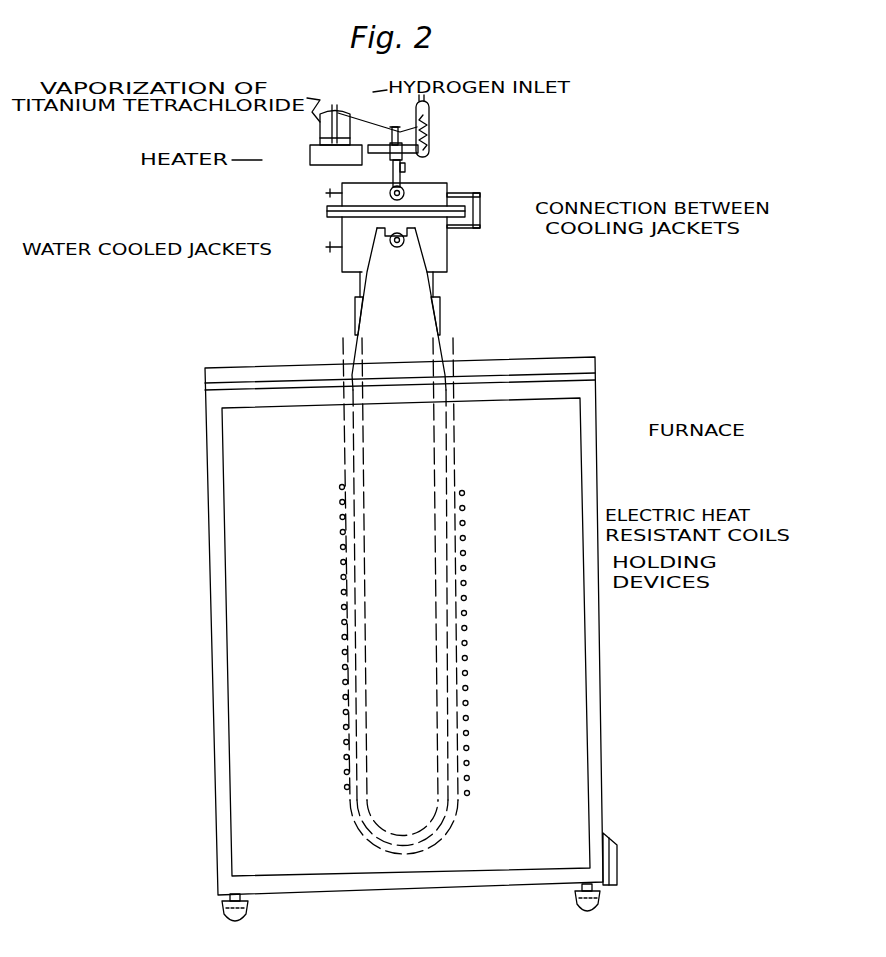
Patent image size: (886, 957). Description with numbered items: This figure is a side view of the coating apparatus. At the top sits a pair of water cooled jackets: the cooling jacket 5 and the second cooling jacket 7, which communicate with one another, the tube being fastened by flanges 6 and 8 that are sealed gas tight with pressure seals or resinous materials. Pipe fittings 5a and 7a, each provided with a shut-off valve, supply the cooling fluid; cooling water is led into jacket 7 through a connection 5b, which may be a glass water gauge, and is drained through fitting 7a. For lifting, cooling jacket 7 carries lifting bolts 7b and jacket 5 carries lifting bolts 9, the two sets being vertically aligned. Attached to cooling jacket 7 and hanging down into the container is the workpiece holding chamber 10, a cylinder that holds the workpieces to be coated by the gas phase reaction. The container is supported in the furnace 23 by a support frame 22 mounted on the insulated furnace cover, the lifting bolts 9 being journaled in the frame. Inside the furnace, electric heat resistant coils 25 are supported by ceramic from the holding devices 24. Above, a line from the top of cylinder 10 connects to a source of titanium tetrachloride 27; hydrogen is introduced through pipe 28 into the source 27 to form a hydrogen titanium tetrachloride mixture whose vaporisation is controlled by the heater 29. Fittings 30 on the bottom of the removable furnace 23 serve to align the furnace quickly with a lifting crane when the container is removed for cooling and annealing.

The cooling jacket 5 is at (283, 246).
The pipe fitting 5a is at (328, 249).
The connection 5b is at (480, 210).
The flange 6 is at (330, 219).
The second cooling jacket 7 is at (394, 195).
The pipe fitting 7a is at (326, 193).
The lifting bolts 7b is at (405, 194).
The flange 8 is at (470, 193).
The lifting bolts 9 is at (405, 241).
The workpiece holding chamber 10 is at (408, 170).
The support frame 22 is at (423, 288).
The furnace 23 is at (588, 430).
The holding devices 24 is at (607, 570).
The electric heat resistant coils 25 is at (600, 523).
The source of titanium tetrachloride 27 is at (320, 128).
The pipe 28 is at (336, 106).
The heater 29 is at (310, 157).
The fittings 30 is at (617, 858).